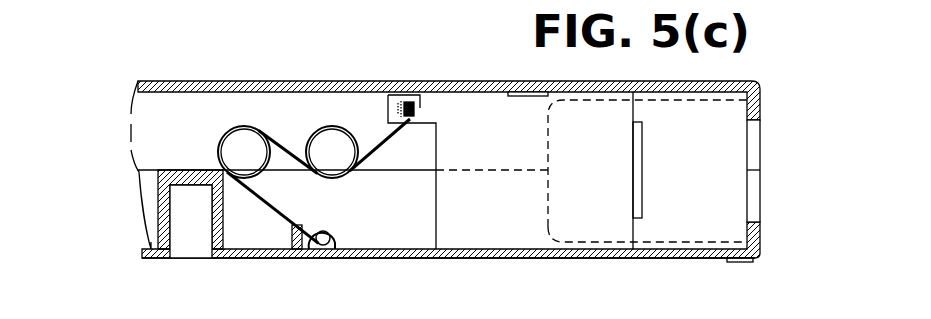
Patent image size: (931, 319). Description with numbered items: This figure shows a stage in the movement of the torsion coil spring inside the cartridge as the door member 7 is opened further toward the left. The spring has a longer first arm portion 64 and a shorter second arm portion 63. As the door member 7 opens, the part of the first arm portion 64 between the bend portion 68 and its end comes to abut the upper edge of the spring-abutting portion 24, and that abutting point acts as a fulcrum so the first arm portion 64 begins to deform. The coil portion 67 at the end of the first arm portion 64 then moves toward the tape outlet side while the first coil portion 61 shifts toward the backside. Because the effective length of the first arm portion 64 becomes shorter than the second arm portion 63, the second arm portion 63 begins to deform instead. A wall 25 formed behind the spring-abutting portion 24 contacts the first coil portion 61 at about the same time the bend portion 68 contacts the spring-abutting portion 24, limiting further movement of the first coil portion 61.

The door member 7 is at (472, 233).
The wall 25 is at (239, 257).
The first coil portion 61 is at (243, 145).
The second arm portion 63 is at (377, 140).
The first arm portion 64 is at (262, 258).
The spring-abutting portion 24 is at (302, 258).
The bend portion 68 is at (302, 227).
The coil portion 67 is at (338, 254).